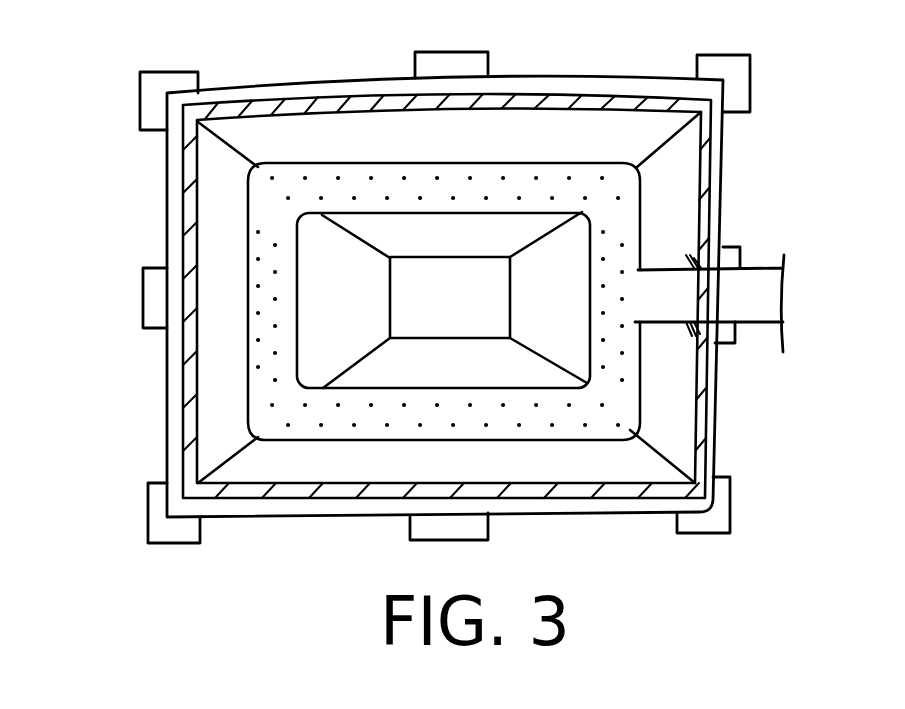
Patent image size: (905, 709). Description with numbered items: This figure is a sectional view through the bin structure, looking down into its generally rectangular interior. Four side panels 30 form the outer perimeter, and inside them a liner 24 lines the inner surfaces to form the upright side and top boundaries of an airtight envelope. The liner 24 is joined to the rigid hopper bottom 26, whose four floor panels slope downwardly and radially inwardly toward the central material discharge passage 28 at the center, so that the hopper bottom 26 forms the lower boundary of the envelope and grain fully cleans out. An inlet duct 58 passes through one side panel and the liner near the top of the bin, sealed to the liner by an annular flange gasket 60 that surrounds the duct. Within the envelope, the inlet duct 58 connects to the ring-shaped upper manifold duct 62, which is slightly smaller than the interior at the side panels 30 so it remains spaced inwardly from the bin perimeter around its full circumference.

The liner 24 is at (197, 210).
The hopper bottom 26 is at (218, 403).
The central material discharge passage 28 is at (424, 272).
The side panels 30 is at (173, 355).
The inlet duct 58 is at (762, 265).
The annular flange gasket 60 is at (686, 262).
The upper manifold duct 62 is at (560, 160).